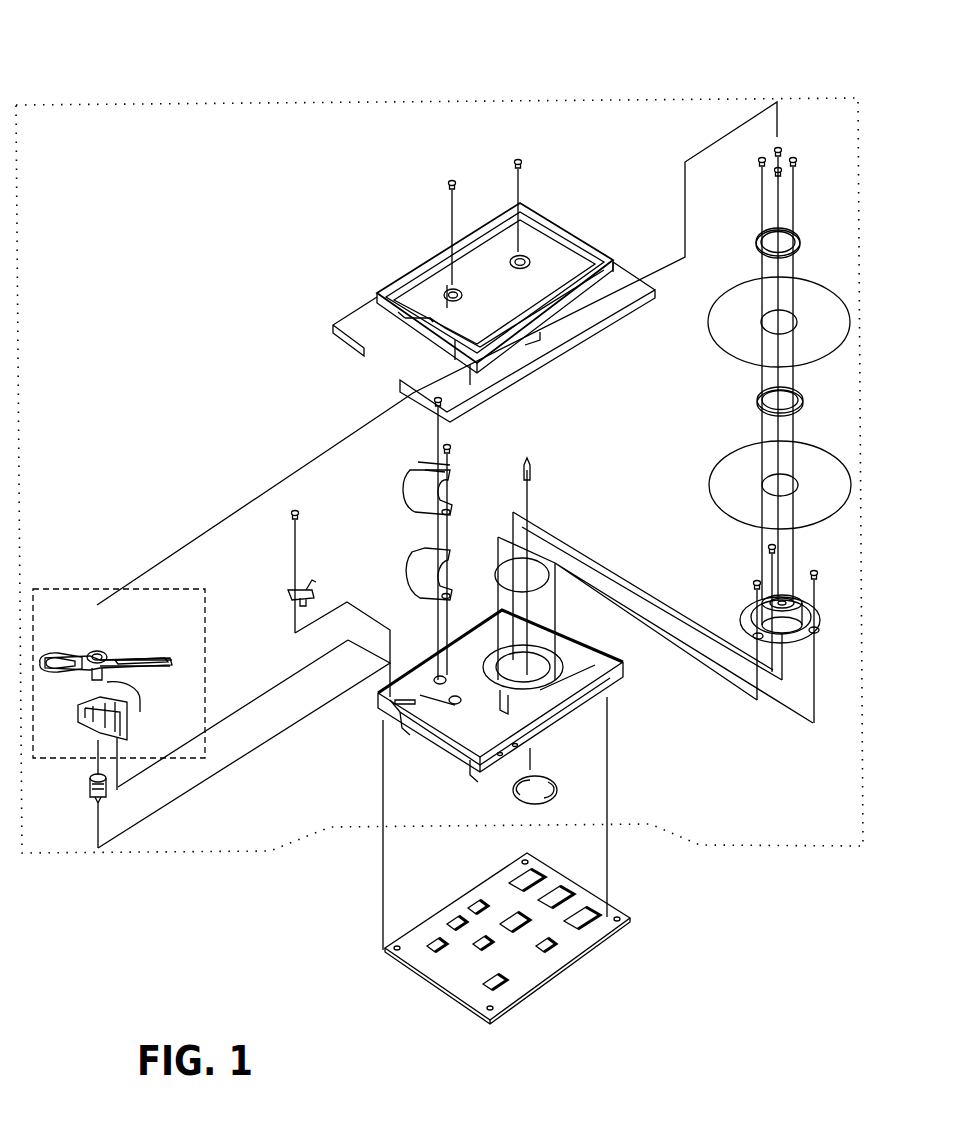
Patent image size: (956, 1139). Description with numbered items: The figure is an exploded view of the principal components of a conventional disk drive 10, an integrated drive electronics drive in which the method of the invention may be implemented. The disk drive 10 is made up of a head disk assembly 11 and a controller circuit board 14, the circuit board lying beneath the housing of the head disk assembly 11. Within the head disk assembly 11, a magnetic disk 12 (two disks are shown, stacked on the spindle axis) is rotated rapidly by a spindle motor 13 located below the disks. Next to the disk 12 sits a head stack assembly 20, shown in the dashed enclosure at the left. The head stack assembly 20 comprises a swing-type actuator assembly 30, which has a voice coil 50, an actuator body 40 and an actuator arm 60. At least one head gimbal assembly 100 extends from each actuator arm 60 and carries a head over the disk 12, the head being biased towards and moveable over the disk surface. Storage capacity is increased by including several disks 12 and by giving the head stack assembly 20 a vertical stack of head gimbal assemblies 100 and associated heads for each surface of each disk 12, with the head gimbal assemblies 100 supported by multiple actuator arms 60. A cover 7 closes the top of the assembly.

The disk drive 10 is at (262, 72).
The cover 7 is at (402, 273).
The head disk assembly 11 is at (704, 846).
The magnetic disk 12 is at (720, 462).
The spindle motor 13 is at (748, 615).
The controller circuit board 14 is at (553, 977).
The head stack assembly 20 is at (70, 588).
The swing-type actuator assembly 30 is at (42, 640).
The actuator body 40 is at (103, 652).
The voice coil 50 is at (75, 673).
The actuator arm 60 is at (152, 670).
The head gimbal assembly 100 is at (152, 657).